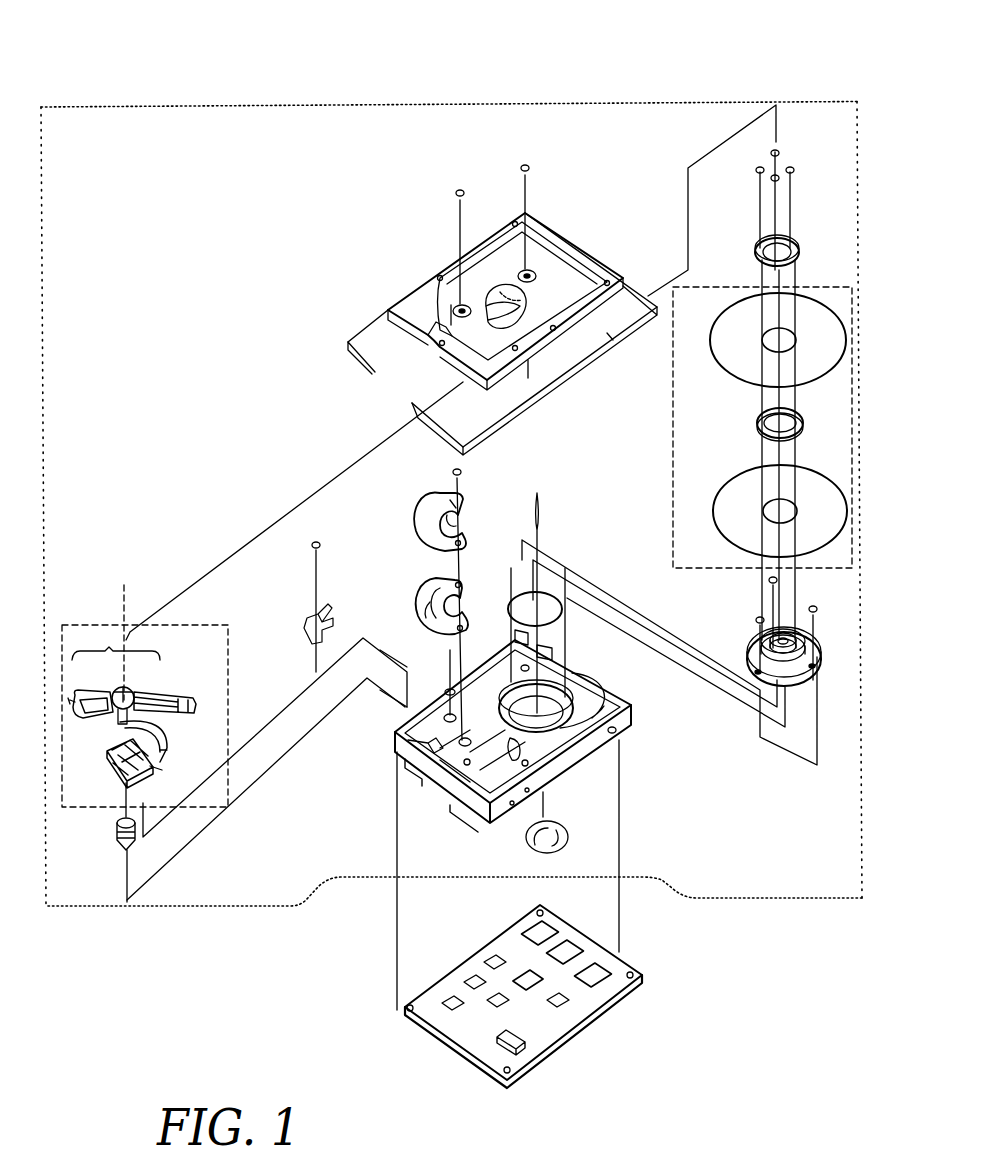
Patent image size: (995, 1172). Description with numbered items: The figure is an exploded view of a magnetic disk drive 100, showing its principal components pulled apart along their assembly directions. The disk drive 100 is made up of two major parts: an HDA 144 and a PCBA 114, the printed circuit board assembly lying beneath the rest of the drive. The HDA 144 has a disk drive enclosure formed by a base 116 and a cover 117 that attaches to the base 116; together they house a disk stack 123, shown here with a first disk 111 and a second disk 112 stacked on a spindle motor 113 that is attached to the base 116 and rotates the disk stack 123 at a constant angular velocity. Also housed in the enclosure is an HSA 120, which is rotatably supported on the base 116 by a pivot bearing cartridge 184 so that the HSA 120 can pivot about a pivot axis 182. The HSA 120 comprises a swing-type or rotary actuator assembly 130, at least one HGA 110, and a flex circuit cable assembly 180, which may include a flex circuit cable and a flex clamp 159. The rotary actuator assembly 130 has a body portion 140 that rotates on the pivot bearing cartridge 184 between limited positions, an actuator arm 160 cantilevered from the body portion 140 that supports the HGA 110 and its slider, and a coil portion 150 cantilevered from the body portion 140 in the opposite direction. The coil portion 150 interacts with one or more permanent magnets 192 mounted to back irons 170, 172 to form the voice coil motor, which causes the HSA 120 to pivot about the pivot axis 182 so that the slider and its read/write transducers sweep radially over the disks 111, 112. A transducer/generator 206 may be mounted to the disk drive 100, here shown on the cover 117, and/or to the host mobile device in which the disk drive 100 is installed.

The magnetic disk drive 100 is at (272, 74).
The HGA 110 is at (192, 698).
The first disk 111 is at (722, 488).
The second disk 112 is at (730, 372).
The spindle motor 113 is at (752, 654).
The PCBA 114 is at (567, 1033).
The base 116 is at (625, 730).
The cover 117 is at (412, 290).
The HSA 120 is at (97, 622).
The disk stack 123 is at (673, 478).
The rotary actuator assembly 130 is at (145, 716).
The body portion 140 is at (122, 696).
The HDA 144 is at (713, 900).
The coil portion 150 is at (87, 722).
The flex clamp 159 is at (118, 770).
The actuator arm 160 is at (173, 717).
The back iron 170 is at (450, 508).
The back iron 172 is at (457, 582).
The flex circuit cable assembly 180 is at (170, 768).
The pivot axis 182 is at (124, 588).
The pivot bearing cartridge 184 is at (116, 842).
The permanent magnet 192 is at (430, 602).
The transducer/generator 206 is at (527, 306).